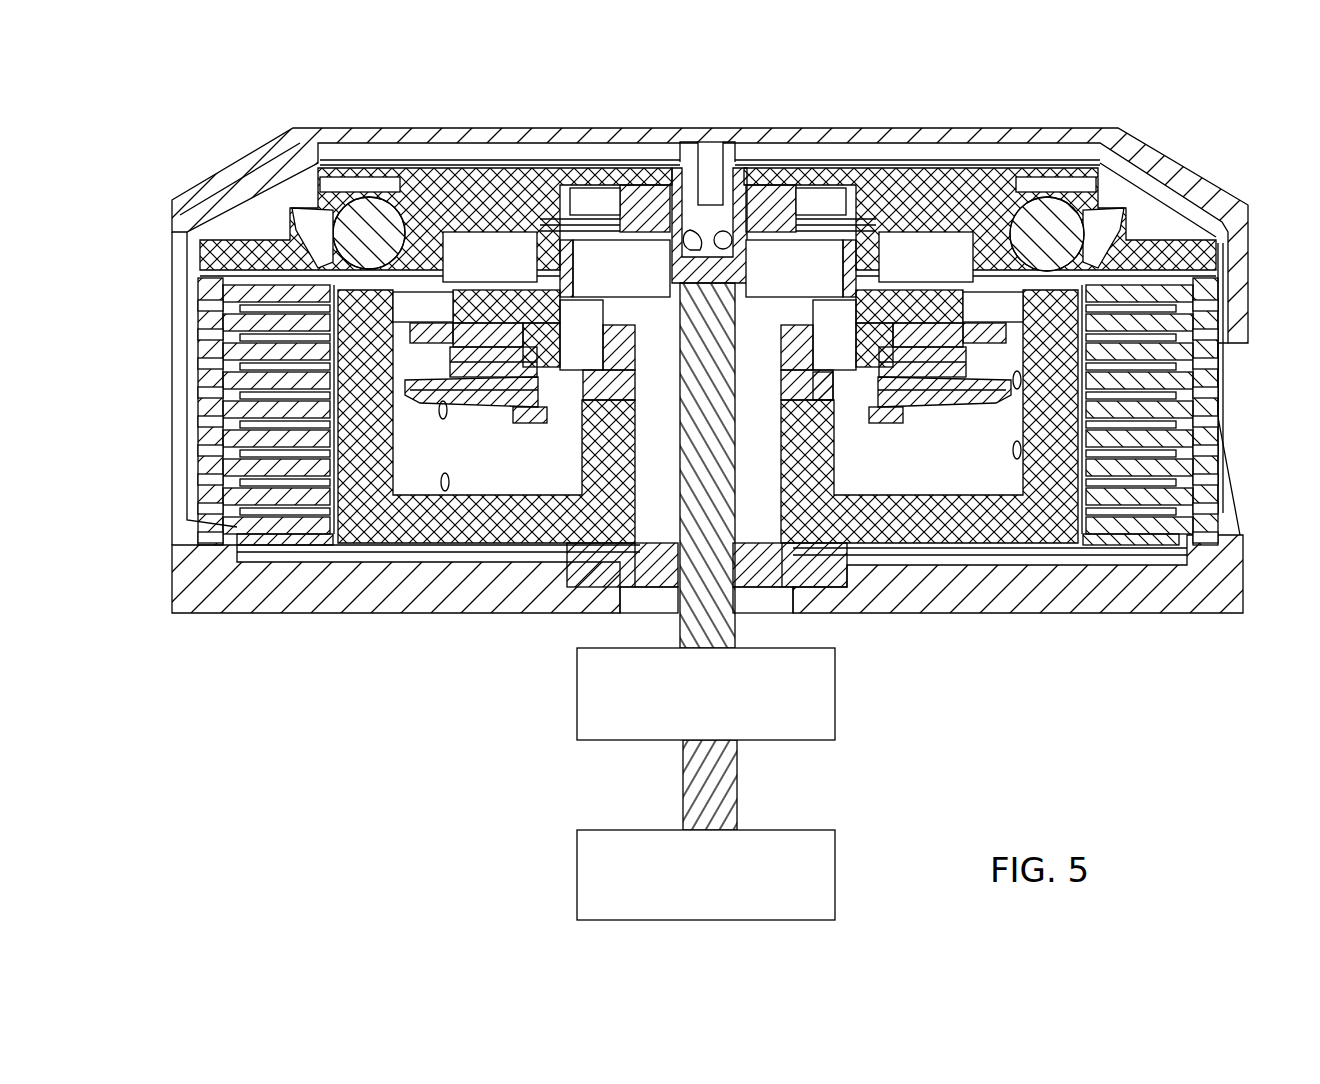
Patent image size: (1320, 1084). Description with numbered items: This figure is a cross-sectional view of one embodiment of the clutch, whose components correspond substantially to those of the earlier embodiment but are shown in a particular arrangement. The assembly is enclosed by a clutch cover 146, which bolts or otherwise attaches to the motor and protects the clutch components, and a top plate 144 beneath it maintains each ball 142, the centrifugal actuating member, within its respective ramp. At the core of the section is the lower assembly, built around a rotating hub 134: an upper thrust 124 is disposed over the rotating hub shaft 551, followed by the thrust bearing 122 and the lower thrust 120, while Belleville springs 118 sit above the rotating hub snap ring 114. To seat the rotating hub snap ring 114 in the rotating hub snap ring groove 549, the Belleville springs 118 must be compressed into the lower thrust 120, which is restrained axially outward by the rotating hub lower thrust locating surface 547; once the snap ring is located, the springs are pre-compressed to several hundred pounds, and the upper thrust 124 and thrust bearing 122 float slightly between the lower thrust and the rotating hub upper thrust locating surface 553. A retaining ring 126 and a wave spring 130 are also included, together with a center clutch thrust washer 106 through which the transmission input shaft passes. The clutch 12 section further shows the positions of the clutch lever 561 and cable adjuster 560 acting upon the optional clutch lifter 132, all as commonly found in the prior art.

The stator 12 is at (180, 282).
The center clutch thrust washer 106 is at (780, 560).
The rotating hub snap ring 114 is at (510, 420).
The Belleville spring 118 is at (912, 400).
The lower thrust 120 is at (537, 363).
The thrust bearing 122 is at (812, 405).
The upper thrust 124 is at (897, 333).
The retaining ring 126 is at (390, 318).
The wave spring 130 is at (578, 250).
The clutch lifter 132 is at (750, 248).
The rotating hub 134 is at (515, 262).
The ball 142 is at (1064, 243).
The top plate 144 is at (975, 165).
The clutch cover 146 is at (805, 128).
The rotating hub lower thrust locating surface 547 is at (537, 362).
The rotating hub snap ring groove 549 is at (558, 402).
The rotating hub shaft 551 is at (828, 370).
The rotating hub upper thrust locating surface 553 is at (930, 322).
The cable adjuster 560 is at (724, 700).
The clutch lever 561 is at (724, 881).